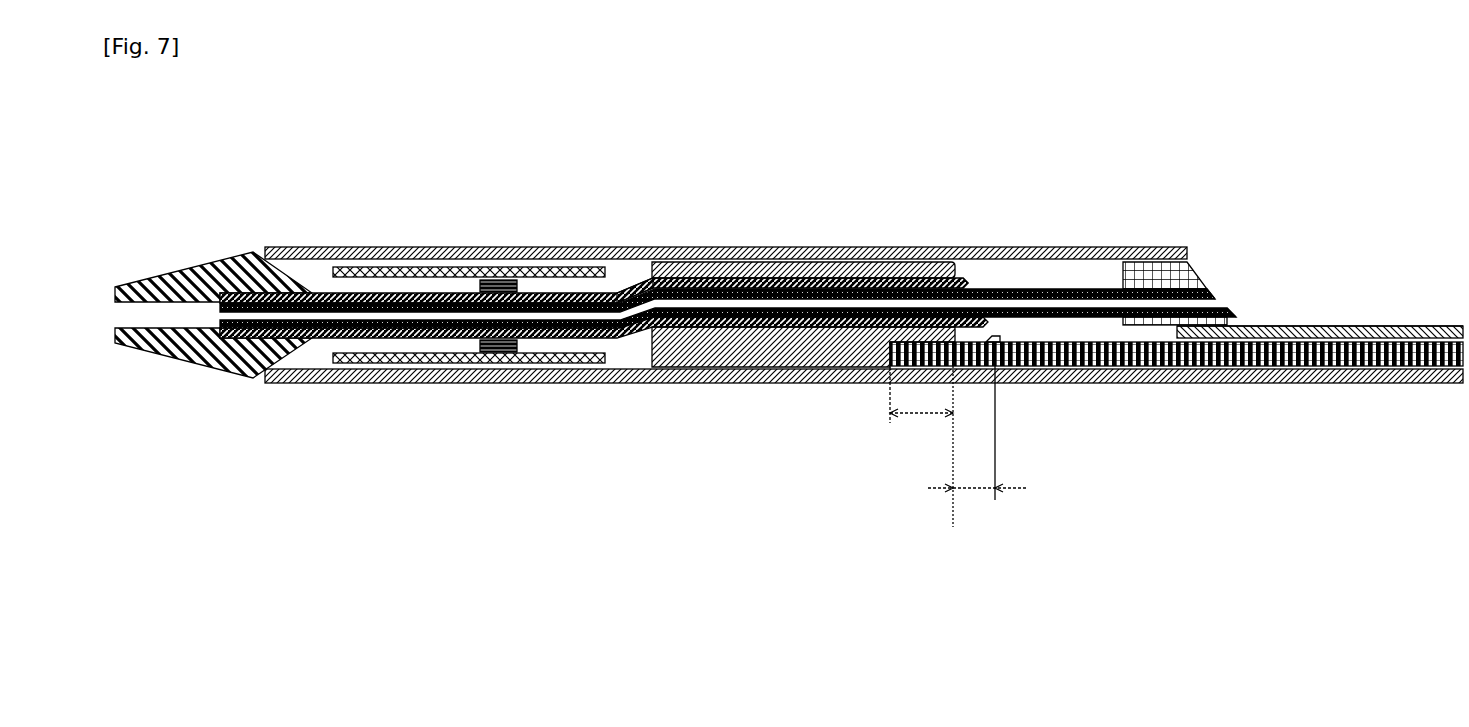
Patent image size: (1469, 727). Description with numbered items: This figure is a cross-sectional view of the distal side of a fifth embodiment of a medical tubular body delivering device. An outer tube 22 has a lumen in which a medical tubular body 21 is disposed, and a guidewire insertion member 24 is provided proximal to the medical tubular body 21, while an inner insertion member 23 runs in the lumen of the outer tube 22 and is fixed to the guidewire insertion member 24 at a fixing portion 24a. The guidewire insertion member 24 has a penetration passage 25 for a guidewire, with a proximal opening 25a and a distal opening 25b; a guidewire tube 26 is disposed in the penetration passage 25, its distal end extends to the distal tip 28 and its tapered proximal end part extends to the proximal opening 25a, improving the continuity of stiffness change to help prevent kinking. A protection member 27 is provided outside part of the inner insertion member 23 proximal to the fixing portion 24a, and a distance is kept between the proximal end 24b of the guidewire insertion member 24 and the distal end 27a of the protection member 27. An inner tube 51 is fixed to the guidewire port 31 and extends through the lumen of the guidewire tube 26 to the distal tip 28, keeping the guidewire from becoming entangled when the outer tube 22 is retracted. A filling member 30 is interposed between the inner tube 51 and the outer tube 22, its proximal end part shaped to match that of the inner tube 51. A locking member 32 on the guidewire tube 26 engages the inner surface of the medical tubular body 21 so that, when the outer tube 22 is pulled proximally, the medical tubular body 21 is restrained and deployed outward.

The medical tubular body 21 is at (412, 266).
The outer tube 22 is at (303, 247).
The inner insertion member 23 is at (1216, 383).
The guidewire insertion member 24 is at (723, 262).
The fixing portion 24a is at (912, 416).
The proximal end of the guidewire insertion member 24b is at (953, 424).
The penetration passage 25 is at (917, 290).
The proximal opening 25a is at (959, 281).
The distal opening 25b is at (651, 280).
The guidewire tube 26 is at (560, 293).
The protection member 27 is at (1350, 325).
The distal end of the protection member 27a is at (958, 504).
The distal tip 28 is at (175, 270).
The filling member 30 is at (1172, 262).
The guidewire port 31 is at (1222, 304).
The locking member 32 is at (477, 280).
The inner tube 51 is at (1083, 312).